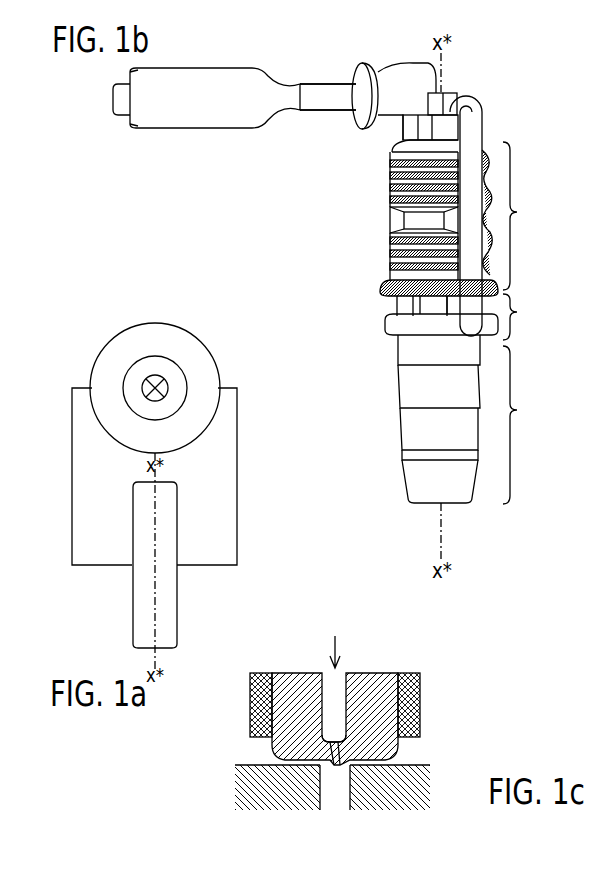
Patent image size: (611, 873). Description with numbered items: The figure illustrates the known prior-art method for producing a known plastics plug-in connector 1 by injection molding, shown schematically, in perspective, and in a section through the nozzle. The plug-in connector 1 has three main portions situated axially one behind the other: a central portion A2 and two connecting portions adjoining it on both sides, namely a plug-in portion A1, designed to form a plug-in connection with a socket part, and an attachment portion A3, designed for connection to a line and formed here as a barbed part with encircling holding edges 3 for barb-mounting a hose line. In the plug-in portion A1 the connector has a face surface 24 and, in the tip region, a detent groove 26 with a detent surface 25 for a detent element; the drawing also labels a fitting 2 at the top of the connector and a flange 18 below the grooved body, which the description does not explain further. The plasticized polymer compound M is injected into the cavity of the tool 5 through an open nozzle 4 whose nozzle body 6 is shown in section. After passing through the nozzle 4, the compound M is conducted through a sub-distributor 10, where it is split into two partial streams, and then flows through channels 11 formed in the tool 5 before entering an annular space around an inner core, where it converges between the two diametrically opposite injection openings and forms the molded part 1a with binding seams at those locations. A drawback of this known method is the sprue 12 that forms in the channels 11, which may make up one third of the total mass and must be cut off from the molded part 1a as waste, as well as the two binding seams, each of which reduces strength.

In FIG. 1B, the plug-in connector 1 is at (350, 229).
In FIG. 1B, the molded part 1a is at (392, 258).
In FIG. 1A, the molded part 1a is at (178, 614).
In FIG. 1B, the fitting 2 is at (446, 96).
In FIG. 1B, the holding edges 3 is at (398, 366).
In FIG. 1B, the nozzle 4 is at (185, 76).
In FIG. 1A, the nozzle 4 is at (112, 352).
In FIG. 1C, the nozzle 4 is at (236, 748).
In FIG. 1C, the tool 5 is at (422, 770).
In FIG. 1C, the nozzle body 6 is at (418, 704).
In FIG. 1B, the sub-distributor 10 is at (332, 92).
In FIG. 1C, the channels 11 is at (402, 748).
In FIG. 1B, the sprue 12 is at (482, 110).
In FIG. 1B, the flange 18 is at (384, 286).
In FIG. 1B, the face surface 24 is at (400, 134).
In FIG. 1B, the detent surface 25 is at (498, 176).
In FIG. 1B, the detent groove 26 is at (392, 192).
In FIG. 1B, the plug-in portion A1 is at (529, 216).
In FIG. 1B, the central portion A2 is at (529, 317).
In FIG. 1B, the attachment portion A3 is at (529, 425).
In FIG. 1C, the plasticized polymer compound M is at (337, 637).